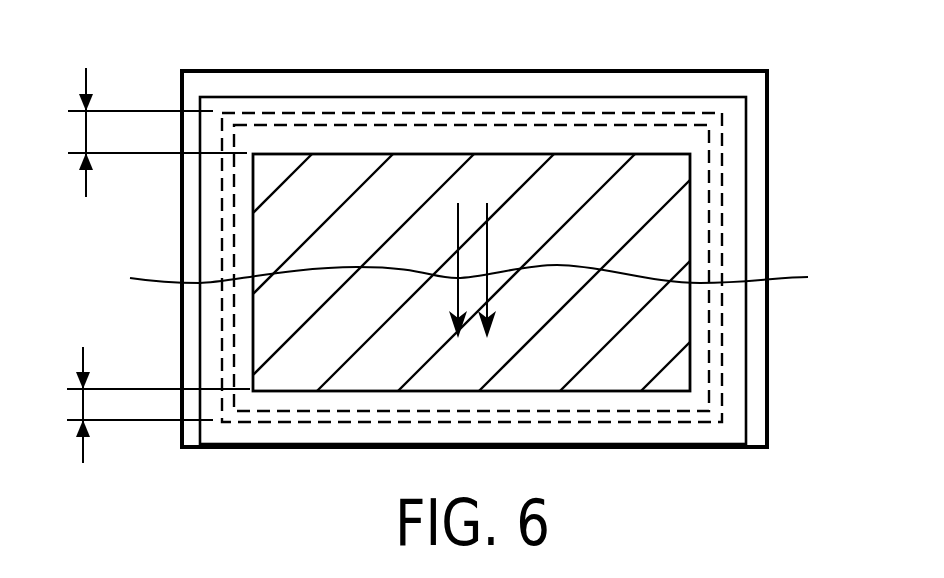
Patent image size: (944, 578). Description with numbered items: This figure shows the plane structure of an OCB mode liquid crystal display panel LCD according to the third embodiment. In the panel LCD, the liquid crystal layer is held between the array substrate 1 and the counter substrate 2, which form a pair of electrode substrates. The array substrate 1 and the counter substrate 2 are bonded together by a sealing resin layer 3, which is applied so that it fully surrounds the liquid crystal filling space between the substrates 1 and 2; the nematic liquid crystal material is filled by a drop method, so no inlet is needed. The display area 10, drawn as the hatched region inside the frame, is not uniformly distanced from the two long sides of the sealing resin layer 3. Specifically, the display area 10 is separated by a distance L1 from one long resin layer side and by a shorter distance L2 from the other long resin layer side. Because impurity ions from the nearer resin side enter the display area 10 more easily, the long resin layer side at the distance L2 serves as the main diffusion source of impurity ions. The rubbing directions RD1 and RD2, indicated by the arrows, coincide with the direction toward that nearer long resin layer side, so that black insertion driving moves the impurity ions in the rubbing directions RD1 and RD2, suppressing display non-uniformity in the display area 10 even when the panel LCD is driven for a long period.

The liquid crystal display panel LCD is at (163, 66).
The array substrate 1 is at (767, 123).
The counter substrate 2 is at (746, 187).
The sealing resin layer 3 is at (690, 327).
The display area 10 is at (722, 378).
The rubbing direction RD1 is at (317, 275).
The rubbing direction RD2 is at (712, 276).
The distance L1 is at (138, 132).
The distance L2 is at (139, 405).